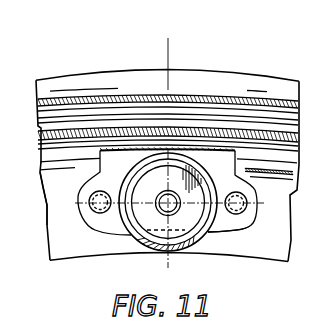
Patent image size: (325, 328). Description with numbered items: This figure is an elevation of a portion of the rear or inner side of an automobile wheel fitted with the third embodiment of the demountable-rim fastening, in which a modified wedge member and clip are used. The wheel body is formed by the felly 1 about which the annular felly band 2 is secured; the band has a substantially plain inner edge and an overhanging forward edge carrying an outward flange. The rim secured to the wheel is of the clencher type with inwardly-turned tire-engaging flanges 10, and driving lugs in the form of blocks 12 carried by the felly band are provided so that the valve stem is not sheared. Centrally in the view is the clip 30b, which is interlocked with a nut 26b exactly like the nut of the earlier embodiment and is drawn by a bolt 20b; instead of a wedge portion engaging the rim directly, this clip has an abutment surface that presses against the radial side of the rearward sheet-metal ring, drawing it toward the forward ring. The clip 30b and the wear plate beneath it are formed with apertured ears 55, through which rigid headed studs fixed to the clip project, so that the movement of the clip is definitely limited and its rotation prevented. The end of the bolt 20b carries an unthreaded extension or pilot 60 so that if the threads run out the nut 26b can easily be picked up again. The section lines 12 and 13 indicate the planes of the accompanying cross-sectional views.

The felly 1 is at (167, 166).
The felly band 2 is at (55, 176).
The tire-engaging flanges 10 is at (168, 115).
The blocks 12 is at (186, 50).
The bolt lugs 13 is at (71, 203).
The bolt 20b is at (187, 240).
The nut 26b is at (162, 208).
The clip 30b is at (174, 201).
The apertured ears 55 is at (251, 226).
The pilot 60 is at (158, 198).